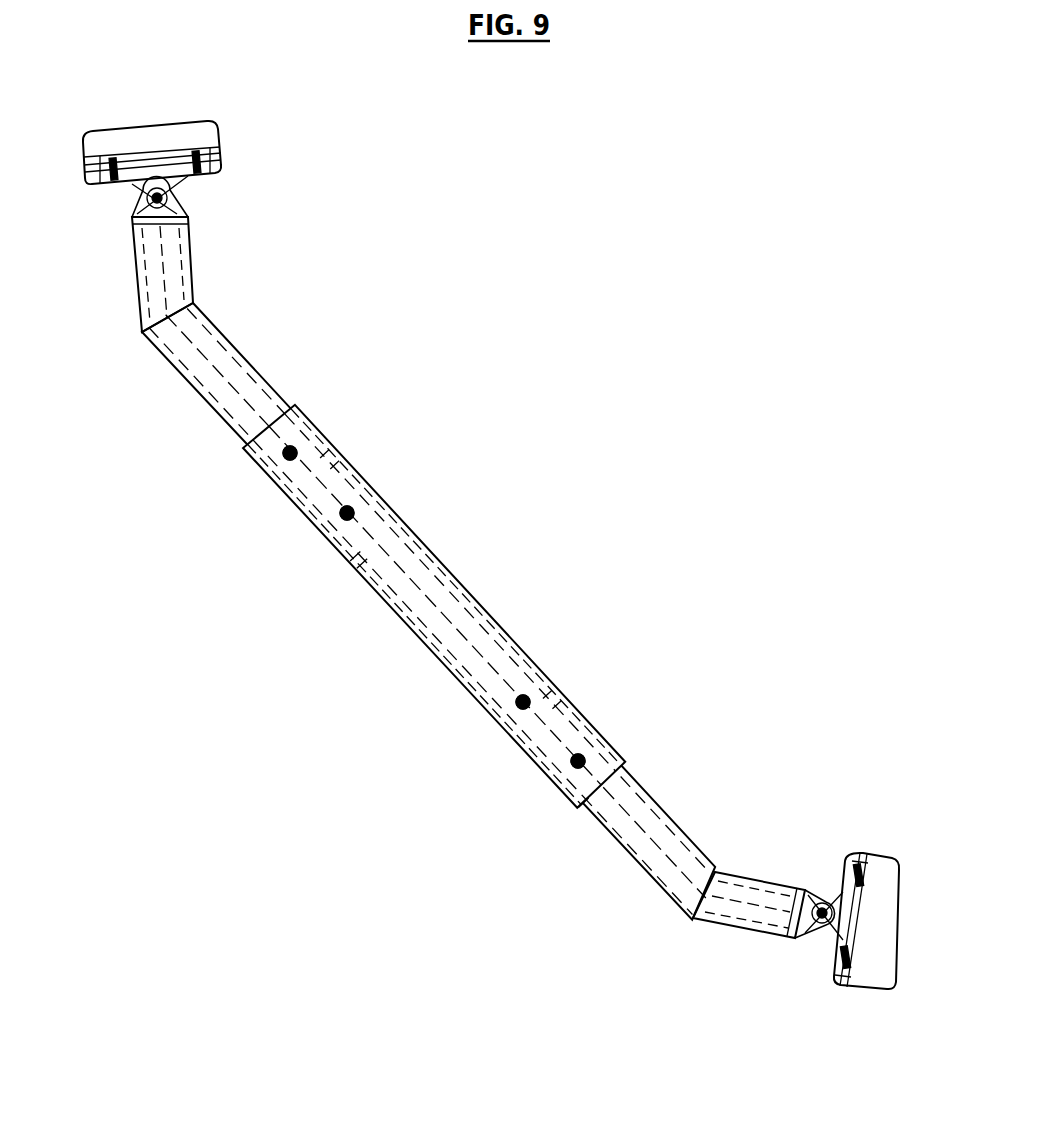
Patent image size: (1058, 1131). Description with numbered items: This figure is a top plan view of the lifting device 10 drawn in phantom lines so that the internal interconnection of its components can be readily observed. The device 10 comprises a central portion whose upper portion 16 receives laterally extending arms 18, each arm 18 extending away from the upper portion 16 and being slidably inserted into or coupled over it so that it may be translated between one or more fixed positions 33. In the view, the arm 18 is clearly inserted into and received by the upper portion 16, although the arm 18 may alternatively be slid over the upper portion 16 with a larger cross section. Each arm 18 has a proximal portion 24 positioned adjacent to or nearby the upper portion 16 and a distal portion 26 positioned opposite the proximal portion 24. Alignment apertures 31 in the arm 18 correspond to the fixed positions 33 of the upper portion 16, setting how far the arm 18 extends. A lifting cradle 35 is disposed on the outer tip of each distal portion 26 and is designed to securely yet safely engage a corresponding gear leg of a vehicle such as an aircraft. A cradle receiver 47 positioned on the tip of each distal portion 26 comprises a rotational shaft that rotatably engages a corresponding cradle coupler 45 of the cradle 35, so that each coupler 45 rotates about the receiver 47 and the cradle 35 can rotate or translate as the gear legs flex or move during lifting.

The device 10 is at (500, 551).
The upper portion 16 is at (456, 574).
The arm 18 is at (126, 337).
The proximal portion 24 is at (170, 363).
The distal portion 26 is at (135, 290).
The alignment aperture 31 is at (434, 607).
The fixed position 33 is at (351, 504).
The lifting cradle 35 is at (183, 138).
The cradle coupler 45 is at (183, 200).
The cradle receiver 47 is at (137, 213).